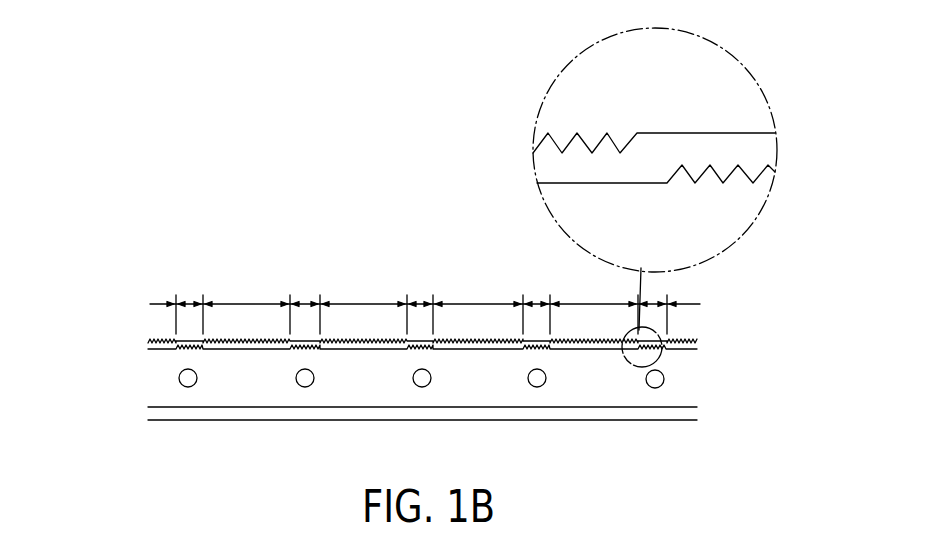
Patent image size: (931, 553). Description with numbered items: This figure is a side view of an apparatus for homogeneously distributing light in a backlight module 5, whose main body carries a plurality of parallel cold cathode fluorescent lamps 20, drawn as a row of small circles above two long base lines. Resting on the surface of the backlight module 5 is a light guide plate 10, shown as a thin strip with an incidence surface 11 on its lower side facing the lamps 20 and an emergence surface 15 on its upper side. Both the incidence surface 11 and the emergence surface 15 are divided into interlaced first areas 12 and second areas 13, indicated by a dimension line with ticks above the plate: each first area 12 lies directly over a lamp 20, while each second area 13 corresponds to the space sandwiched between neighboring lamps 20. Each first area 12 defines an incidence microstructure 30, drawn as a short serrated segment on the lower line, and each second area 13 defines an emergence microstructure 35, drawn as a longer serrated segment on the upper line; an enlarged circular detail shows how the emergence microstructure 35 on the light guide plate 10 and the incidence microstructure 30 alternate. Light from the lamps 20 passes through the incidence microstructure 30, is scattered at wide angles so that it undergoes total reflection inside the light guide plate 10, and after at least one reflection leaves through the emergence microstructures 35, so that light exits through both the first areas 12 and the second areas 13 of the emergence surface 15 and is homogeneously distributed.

The backlight module 5 is at (685, 373).
The light guide plate 10 is at (720, 147).
The incidence surface 11 is at (164, 345).
The first area 12 is at (421, 301).
The second area 13 is at (425, 287).
The emergence surface 15 is at (157, 338).
The cold cathode fluorescent lamp 20 is at (308, 386).
The incidence microstructure 30 is at (297, 350).
The emergence microstructure 35 is at (272, 342).